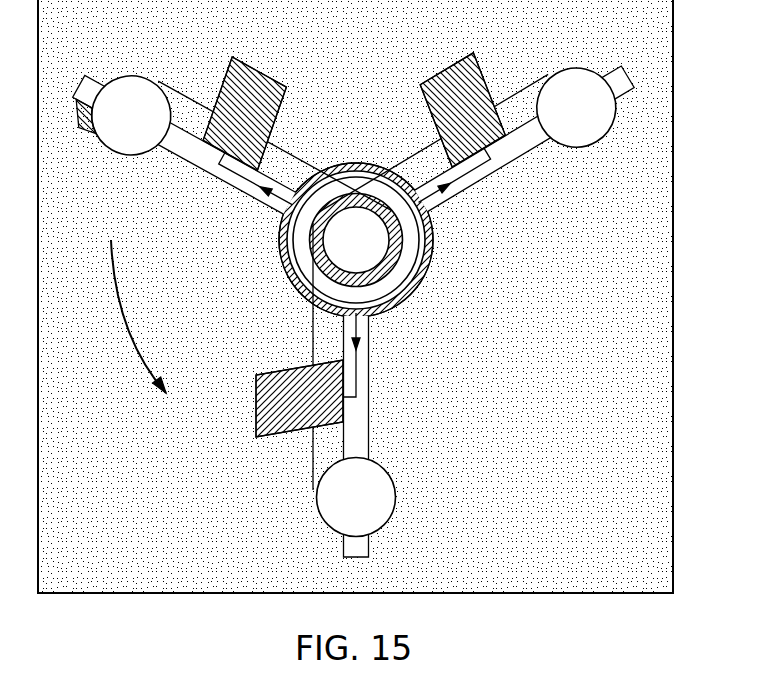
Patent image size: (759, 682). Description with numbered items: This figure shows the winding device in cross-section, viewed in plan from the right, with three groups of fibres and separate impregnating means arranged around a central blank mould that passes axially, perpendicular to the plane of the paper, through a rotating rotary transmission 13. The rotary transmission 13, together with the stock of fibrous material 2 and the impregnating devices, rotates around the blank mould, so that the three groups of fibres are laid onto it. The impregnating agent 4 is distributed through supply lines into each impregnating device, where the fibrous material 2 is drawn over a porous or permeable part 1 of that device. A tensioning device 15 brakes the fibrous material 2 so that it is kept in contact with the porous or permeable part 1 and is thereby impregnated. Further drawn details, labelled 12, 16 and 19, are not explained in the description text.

The porous or permeable part 1 is at (138, 78).
The fibrous material 2 is at (248, 60).
The impregnating agent 4 is at (414, 278).
The hub 12 is at (386, 311).
The rotary transmission 13 is at (368, 428).
The tensioning device 15 is at (676, 386).
The pad 16 is at (84, 137).
The outer ring 19 is at (433, 240).